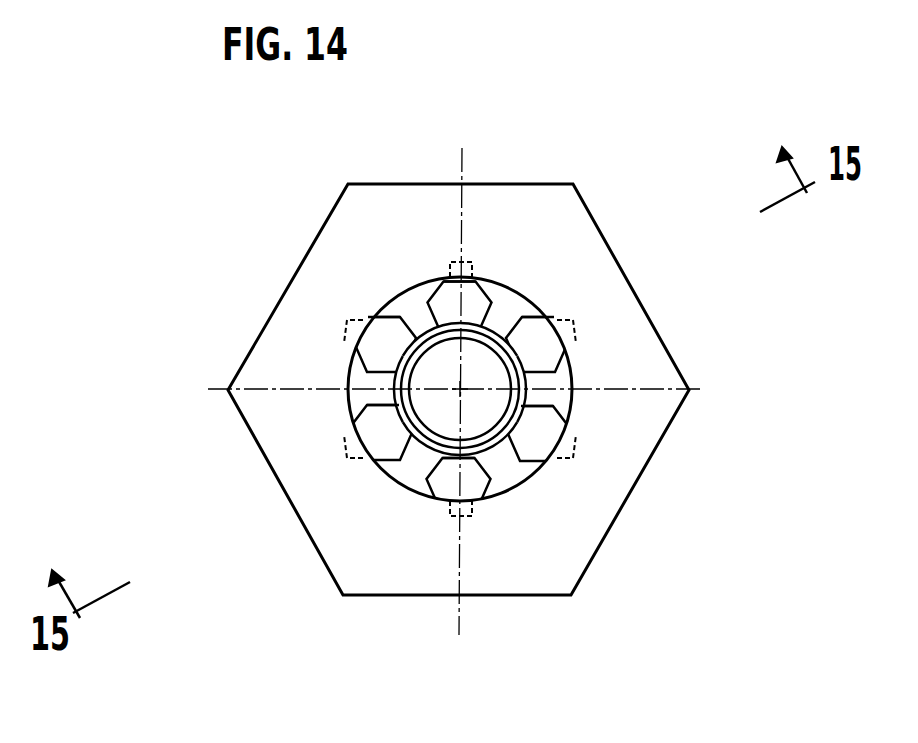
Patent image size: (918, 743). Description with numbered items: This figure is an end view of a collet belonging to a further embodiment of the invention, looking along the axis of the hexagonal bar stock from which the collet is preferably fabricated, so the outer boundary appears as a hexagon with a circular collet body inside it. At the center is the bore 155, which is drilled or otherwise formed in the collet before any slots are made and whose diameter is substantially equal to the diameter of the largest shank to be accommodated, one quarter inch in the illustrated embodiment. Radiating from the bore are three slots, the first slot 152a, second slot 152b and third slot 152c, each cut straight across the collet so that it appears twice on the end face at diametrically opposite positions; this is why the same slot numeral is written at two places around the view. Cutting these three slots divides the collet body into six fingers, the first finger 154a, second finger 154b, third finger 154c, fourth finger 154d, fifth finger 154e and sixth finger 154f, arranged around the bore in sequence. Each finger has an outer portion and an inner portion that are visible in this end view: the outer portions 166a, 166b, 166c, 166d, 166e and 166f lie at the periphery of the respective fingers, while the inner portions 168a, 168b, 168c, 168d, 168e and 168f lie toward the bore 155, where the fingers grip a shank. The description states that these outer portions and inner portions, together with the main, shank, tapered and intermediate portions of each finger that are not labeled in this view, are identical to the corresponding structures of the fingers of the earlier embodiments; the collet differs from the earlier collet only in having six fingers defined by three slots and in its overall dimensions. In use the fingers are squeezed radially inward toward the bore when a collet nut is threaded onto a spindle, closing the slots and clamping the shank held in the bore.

The first slot 152a is at (512, 303).
The second slot 152b is at (552, 403).
The third slot 152c is at (512, 475).
The first finger 154a is at (472, 290).
The second finger 154b is at (547, 344).
The third finger 154c is at (545, 437).
The fourth finger 154d is at (490, 472).
The fifth finger 154e is at (375, 432).
The sixth finger 154f is at (372, 340).
The bore 155 is at (405, 466).
The outer portion 166a is at (472, 262).
The outer portion 166b is at (567, 322).
The outer portion 166c is at (562, 460).
The outer portion 166d is at (472, 505).
The outer portion 166e is at (358, 453).
The outer portion 166f is at (352, 322).
The inner portion 168a is at (445, 272).
The inner portion 168b is at (535, 361).
The inner portion 168c is at (560, 425).
The inner portion 168d is at (446, 501).
The inner portion 168e is at (385, 417).
The inner portion 168f is at (366, 338).